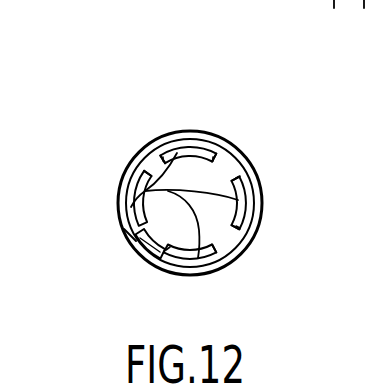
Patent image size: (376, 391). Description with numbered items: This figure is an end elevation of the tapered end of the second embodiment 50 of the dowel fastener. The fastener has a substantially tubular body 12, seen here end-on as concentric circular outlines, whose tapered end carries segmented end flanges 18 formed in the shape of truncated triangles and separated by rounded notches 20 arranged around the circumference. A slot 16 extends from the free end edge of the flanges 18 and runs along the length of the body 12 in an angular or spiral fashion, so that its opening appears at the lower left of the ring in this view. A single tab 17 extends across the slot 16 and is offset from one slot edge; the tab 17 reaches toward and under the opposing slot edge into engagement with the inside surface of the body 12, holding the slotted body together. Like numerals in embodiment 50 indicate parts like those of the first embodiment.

The tubular body 12 is at (244, 138).
The second embodiment of the dowel fastener 50 is at (208, 110).
The rounded notches 20 is at (138, 150).
The segmented end flanges 18 is at (145, 191).
The slot 16 is at (147, 266).
The tab 17 is at (137, 257).